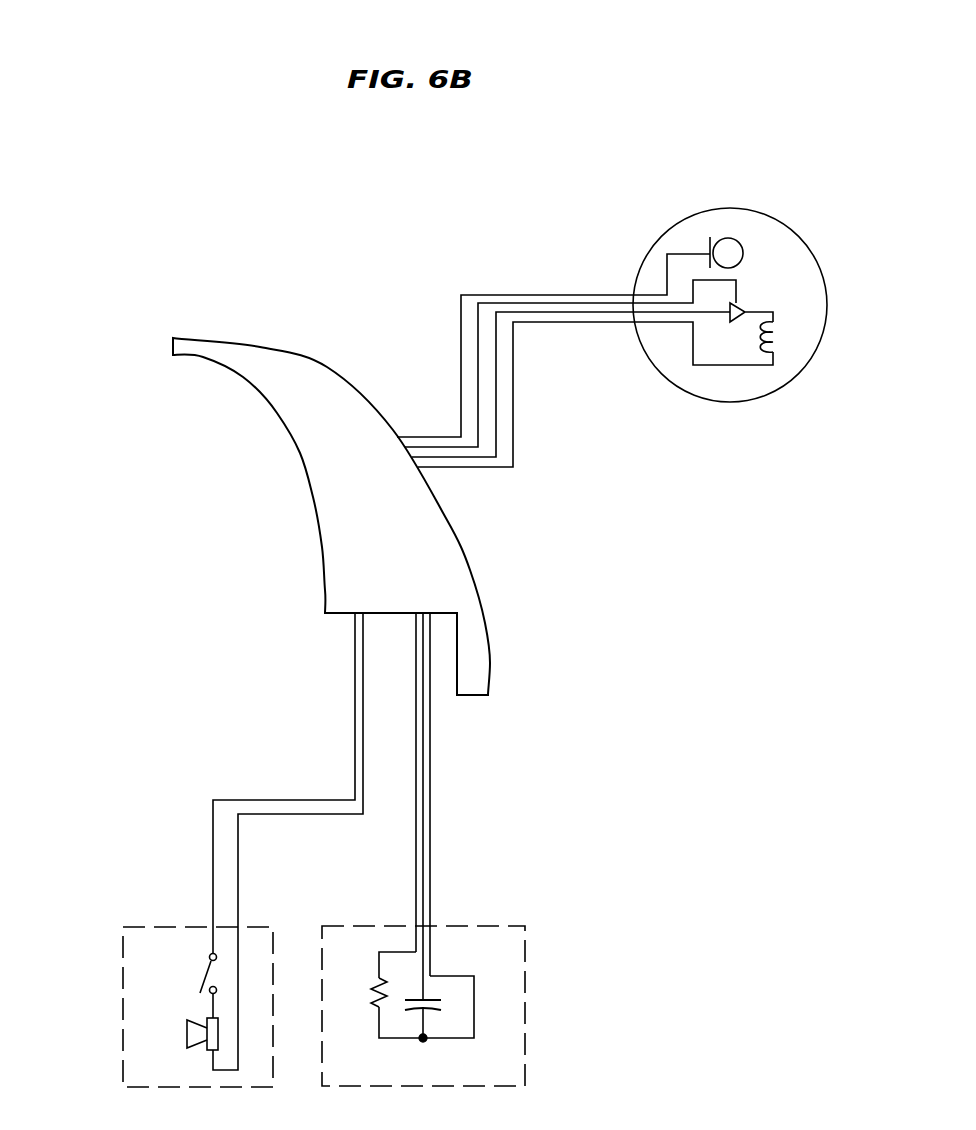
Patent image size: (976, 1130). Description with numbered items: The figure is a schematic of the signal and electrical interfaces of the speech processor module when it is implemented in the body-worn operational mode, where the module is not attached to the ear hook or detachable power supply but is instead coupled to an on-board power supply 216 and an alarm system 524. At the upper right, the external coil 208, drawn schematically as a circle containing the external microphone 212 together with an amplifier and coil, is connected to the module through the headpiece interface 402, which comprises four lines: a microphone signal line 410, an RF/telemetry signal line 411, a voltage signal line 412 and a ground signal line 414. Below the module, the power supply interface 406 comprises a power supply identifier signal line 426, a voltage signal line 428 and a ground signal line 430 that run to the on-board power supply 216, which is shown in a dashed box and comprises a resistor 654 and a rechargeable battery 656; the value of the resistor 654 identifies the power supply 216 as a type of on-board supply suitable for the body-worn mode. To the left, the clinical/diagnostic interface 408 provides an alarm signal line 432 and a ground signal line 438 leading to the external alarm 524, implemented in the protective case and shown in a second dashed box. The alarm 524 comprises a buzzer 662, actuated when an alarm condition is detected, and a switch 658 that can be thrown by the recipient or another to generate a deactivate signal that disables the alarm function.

The headpiece interface 402 is at (589, 135).
The microphone signal line 410 is at (461, 380).
The RF/telemetry signal line 411 is at (473, 328).
The voltage signal line 412 is at (548, 312).
The ground signal line 414 is at (604, 322).
The external coil 208 is at (800, 235).
The external microphone 212 is at (722, 237).
The power supply interface 406 is at (612, 775).
The power supply identifier (ID) signal line 426 is at (416, 724).
The voltage signal line 428 is at (424, 785).
The ground signal line 430 is at (431, 841).
The on-board power supply 216 is at (504, 925).
The resistor 654 is at (372, 992).
The rechargeable battery 656 is at (437, 1010).
The clinical/diagnostic interface 408 is at (188, 856).
The alarm signal line 432 is at (233, 800).
The ground signal line 438 is at (305, 814).
The external alarm 524 is at (123, 965).
The switch 658 is at (203, 978).
The buzzer 662 is at (187, 1040).